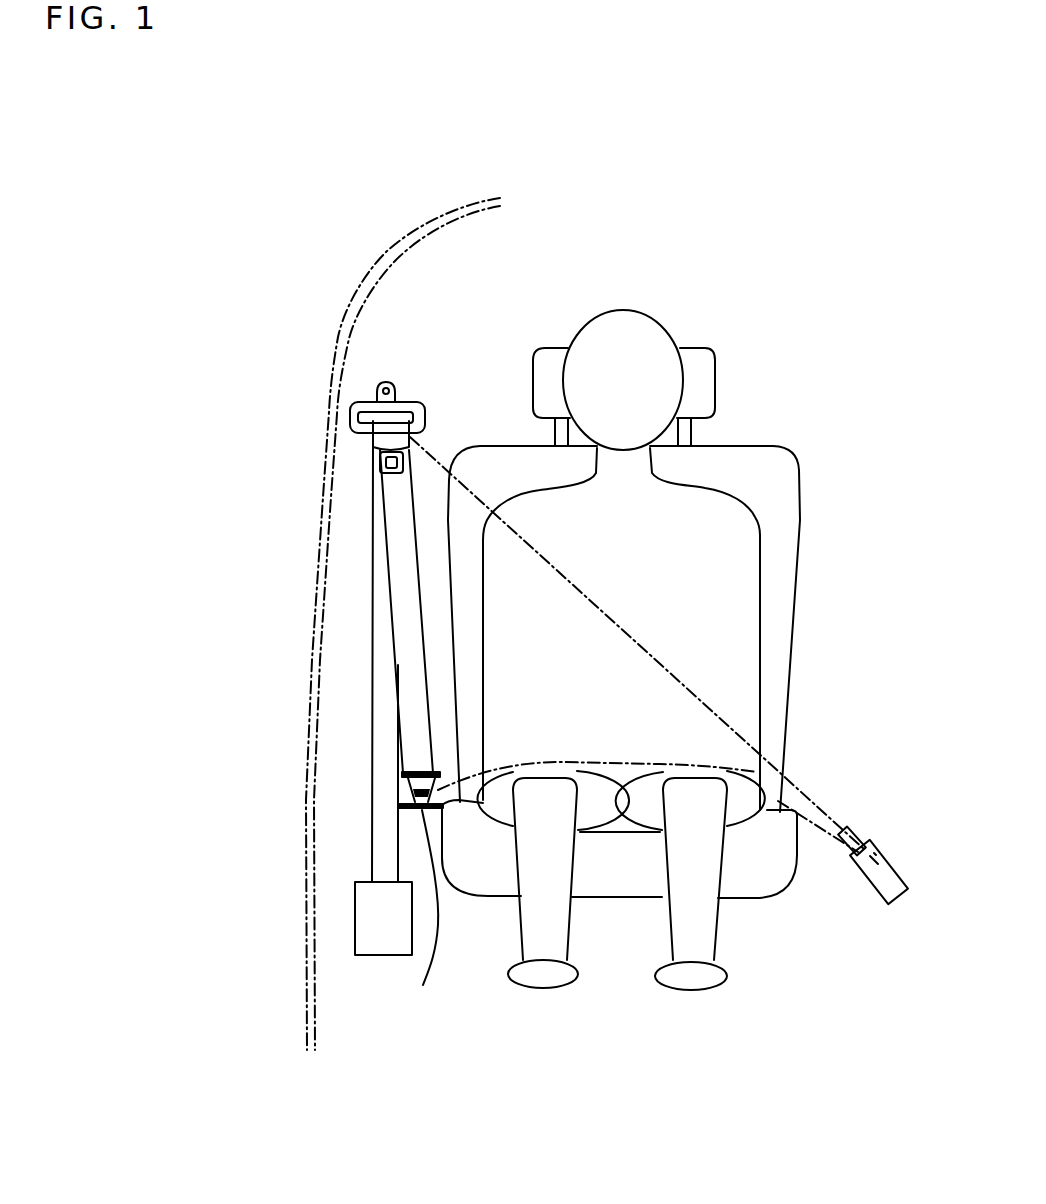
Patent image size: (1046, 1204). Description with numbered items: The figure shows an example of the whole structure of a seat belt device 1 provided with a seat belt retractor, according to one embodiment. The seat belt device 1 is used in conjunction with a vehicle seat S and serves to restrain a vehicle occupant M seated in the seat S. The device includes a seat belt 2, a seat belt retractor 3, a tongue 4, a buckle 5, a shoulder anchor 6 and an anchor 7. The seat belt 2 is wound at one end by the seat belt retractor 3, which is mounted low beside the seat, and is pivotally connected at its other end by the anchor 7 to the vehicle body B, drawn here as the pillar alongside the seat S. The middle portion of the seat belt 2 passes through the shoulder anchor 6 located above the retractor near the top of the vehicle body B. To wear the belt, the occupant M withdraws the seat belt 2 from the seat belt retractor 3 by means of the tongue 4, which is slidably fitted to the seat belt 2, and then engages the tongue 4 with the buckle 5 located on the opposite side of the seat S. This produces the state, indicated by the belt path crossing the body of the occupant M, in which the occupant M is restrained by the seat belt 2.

The seat belt device 1 is at (361, 700).
The seat belt 2 is at (378, 829).
The seat belt retractor 3 is at (372, 940).
The tongue 4 is at (383, 442).
The buckle 5 is at (886, 866).
The shoulder anchor 6 is at (399, 403).
The anchor 7 is at (420, 893).
The vehicle body B is at (339, 340).
The vehicle occupant M is at (620, 310).
The vehicle seat S is at (797, 573).